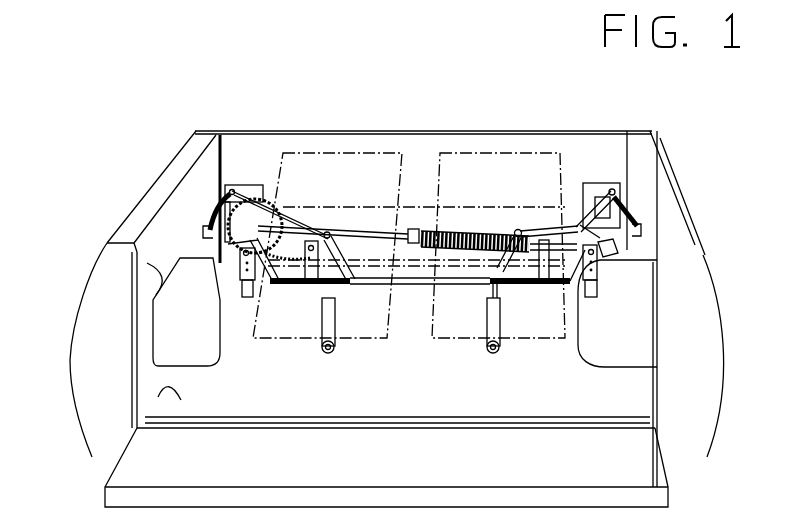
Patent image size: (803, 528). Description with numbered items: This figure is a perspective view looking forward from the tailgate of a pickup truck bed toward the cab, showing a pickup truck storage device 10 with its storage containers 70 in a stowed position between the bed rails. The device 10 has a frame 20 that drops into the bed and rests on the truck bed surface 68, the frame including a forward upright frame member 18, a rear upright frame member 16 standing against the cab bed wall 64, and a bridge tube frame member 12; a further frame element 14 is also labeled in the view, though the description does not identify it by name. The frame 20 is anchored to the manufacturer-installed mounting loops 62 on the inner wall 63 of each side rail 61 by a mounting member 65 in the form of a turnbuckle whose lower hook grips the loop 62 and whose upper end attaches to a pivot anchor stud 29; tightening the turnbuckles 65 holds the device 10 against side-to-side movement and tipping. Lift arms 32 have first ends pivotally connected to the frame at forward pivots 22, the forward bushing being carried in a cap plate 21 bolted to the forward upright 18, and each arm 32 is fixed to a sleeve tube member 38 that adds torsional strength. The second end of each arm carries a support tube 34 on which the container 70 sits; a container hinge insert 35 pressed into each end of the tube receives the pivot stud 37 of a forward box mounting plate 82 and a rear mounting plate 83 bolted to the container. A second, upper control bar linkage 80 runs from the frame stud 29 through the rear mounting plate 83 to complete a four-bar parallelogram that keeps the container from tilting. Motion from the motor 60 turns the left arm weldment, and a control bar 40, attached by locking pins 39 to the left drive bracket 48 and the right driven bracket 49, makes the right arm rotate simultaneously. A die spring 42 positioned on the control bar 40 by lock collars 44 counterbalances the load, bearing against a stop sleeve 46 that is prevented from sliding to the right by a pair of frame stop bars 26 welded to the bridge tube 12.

The pickup truck storage device 10 is at (119, 73).
The bridge tube frame member 12 is at (413, 280).
The base 14 is at (593, 353).
The rear upright frame member 16 is at (600, 187).
The forward upright frame member 18 is at (248, 298).
The frame 20 is at (426, 163).
The forward cap plate 21 is at (191, 330).
The forward pivot 22 is at (240, 282).
The frame stop bars 26 is at (540, 300).
The pivot anchor stud 29 is at (217, 208).
The lift arms 32 is at (278, 300).
The support tube 34 is at (332, 313).
The container hinge insert 35 is at (332, 320).
The pivot stud 37 is at (305, 342).
The sleeve tube member 38 is at (213, 232).
The locking pins 39 is at (612, 250).
The control bar 40 is at (370, 276).
The die spring 42 is at (453, 232).
The lock collars 44 is at (410, 229).
The stop sleeve 46 is at (562, 235).
The drive bracket 48 is at (263, 217).
The driven bracket 49 is at (625, 250).
The motor 60 is at (121, 242).
The side rail 61 is at (100, 214).
The mounting loops 62 is at (207, 233).
The inner wall 63 is at (160, 278).
The cab bed wall 64 is at (590, 143).
The mounting member 65 is at (216, 193).
The truck bed surface 68 is at (157, 397).
The storage containers 70 is at (309, 152).
The control bar linkage 80 is at (214, 133).
The forward box mounting plate 82 is at (330, 310).
The rear mounting plate 83 is at (355, 272).